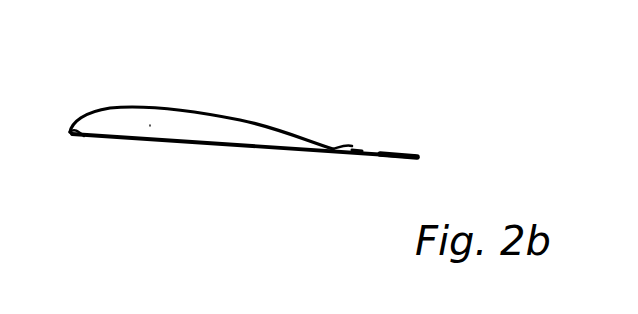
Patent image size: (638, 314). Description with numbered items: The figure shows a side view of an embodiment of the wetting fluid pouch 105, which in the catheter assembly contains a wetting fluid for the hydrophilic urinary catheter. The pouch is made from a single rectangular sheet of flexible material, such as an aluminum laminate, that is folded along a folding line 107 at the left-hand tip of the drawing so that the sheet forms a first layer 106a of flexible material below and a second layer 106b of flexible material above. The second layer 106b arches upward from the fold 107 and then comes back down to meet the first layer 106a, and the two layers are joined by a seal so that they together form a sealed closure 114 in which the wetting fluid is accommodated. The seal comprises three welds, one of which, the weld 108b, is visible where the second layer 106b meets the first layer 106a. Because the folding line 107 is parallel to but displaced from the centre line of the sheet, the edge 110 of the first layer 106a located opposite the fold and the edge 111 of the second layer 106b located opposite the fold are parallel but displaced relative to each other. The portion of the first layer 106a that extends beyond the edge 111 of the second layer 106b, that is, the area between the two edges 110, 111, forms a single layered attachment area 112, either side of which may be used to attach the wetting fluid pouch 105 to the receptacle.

The wetting fluid pouch 105 is at (266, 96).
The first layer of flexible material 106a is at (198, 150).
The second layer of flexible material 106b is at (217, 112).
The folding line 107 is at (85, 141).
The weld 108b is at (333, 147).
The edge of the first layer 110 is at (417, 157).
The edge of the second layer 111 is at (360, 149).
The single layered attachment area 112 is at (400, 153).
The sealed closure 114 is at (150, 125).